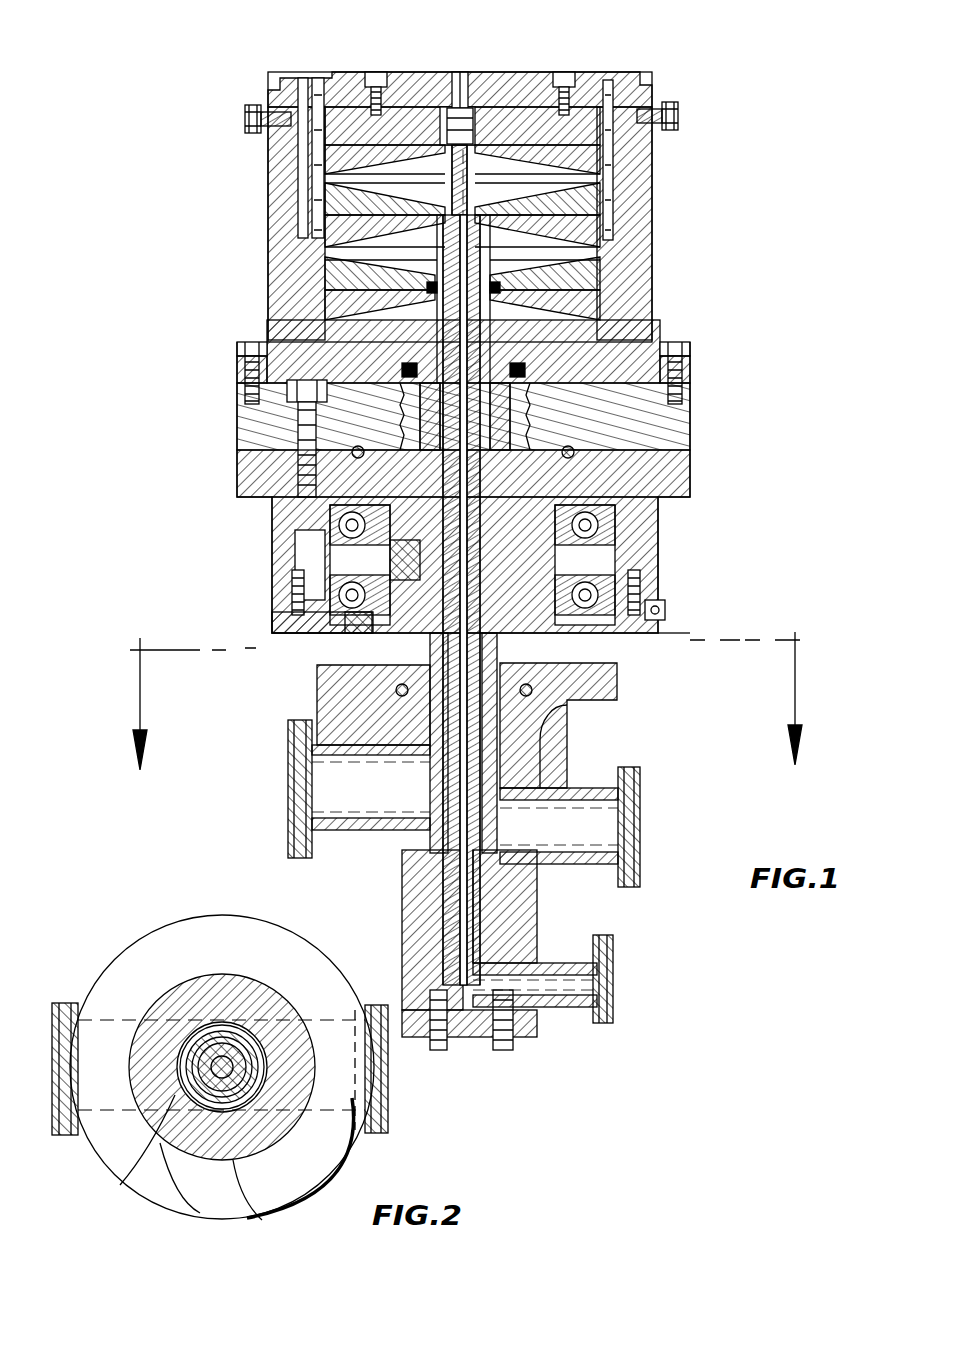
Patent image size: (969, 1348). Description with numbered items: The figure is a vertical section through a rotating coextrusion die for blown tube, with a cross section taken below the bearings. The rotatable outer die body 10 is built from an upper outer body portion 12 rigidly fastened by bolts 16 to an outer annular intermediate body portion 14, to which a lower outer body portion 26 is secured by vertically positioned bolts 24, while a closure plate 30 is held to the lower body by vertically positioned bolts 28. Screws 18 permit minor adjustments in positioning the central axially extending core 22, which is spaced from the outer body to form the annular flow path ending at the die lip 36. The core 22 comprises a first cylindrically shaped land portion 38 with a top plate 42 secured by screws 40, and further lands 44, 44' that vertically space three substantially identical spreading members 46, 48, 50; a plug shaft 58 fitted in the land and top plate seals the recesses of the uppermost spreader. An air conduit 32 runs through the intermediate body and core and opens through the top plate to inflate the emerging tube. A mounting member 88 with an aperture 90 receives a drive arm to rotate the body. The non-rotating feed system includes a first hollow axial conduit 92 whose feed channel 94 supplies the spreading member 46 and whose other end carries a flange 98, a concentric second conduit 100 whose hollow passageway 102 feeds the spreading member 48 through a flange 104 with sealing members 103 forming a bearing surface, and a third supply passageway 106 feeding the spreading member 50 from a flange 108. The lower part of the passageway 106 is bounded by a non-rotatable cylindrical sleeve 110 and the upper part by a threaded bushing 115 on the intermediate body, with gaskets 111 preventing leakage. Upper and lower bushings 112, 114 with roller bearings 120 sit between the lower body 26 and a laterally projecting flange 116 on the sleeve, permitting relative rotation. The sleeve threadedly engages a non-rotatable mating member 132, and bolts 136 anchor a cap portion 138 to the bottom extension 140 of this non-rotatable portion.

In FIG. 1, the outer die body 10 is at (674, 150).
In FIG. 1, the upper outer body portion 12 is at (655, 232).
In FIG. 1, the outer annular intermediate body portion 14 is at (237, 395).
In FIG. 1, the bolts 16 is at (255, 340).
In FIG. 1, the bolts or screws 18 is at (678, 113).
In FIG. 1, the central axially extending core 22 is at (545, 46).
In FIG. 1, the vertically positioned bolts 24 is at (237, 427).
In FIG. 1, the lower outer body portion 26 is at (690, 492).
In FIG. 1, the vertically positioned bolts 28 is at (272, 642).
In FIG. 1, the closure plate 30 is at (292, 597).
In FIG. 1, the air conduit 32 is at (538, 33).
In FIG. 1, the die lip 36 is at (316, 78).
In FIG. 1, the first cylindrically shaped land portion 38 is at (268, 207).
In FIG. 1, the bolts or screws 40 is at (376, 72).
In FIG. 1, the top plate 42 is at (418, 78).
In FIG. 1, the land 44 is at (364, 273).
In FIG. 1, the land 44' is at (332, 255).
In FIG. 1, the spreading member 46 is at (610, 175).
In FIG. 1, the spreading member 48 is at (610, 242).
In FIG. 1, the spreading member 50 is at (600, 322).
In FIG. 1, the plug shaft 58 is at (460, 72).
In FIG. 1, the mounting member 88 is at (665, 627).
In FIG. 1, the aperture 90 is at (660, 603).
In FIG. 1, the first hollow axial conduit 92 is at (660, 537).
In FIG. 2, the first hollow axial conduit 92 is at (222, 1032).
In FIG. 1, the feed channel 94 is at (690, 402).
In FIG. 2, the feed channel 94 is at (240, 1047).
In FIG. 1, the flange and related hardware 98 is at (612, 947).
In FIG. 1, the second hollow conduit 100 is at (640, 557).
In FIG. 2, the second hollow conduit 100 is at (262, 1220).
In FIG. 1, the hollow passageway 102 is at (640, 577).
In FIG. 2, the hollow passageway 102 is at (340, 1105).
In FIG. 1, the gaskets or sealing members 103 is at (610, 212).
In FIG. 1, the flange and related hardware 104 is at (625, 764).
In FIG. 2, the flange and related hardware 104 is at (385, 1135).
In FIG. 2, the third supply passageway 106 is at (137, 1183).
In FIG. 1, the flange and related hardware 108 is at (300, 855).
In FIG. 2, the flange and related hardware 108 is at (70, 1003).
In FIG. 1, the cylindrical supporting and mounting sleeve 110 is at (340, 647).
In FIG. 1, the sealing gaskets 111 is at (290, 492).
In FIG. 1, the upper roller bearing or bushing 112 is at (378, 533).
In FIG. 1, the lower roller bearing or bushing 114 is at (345, 630).
In FIG. 1, the threaded bushing 115 is at (237, 372).
In FIG. 1, the laterally projecting flange 116 is at (300, 577).
In FIG. 1, the roller bearings 120 is at (272, 532).
In FIG. 1, the non-rotatable mating member 132 is at (570, 722).
In FIG. 1, the bolts 136 is at (445, 1047).
In FIG. 1, the cap portion 138 is at (540, 1025).
In FIG. 1, the bottom extension 140 is at (415, 925).
In FIG. 2, the bottom extension 140 is at (222, 1067).